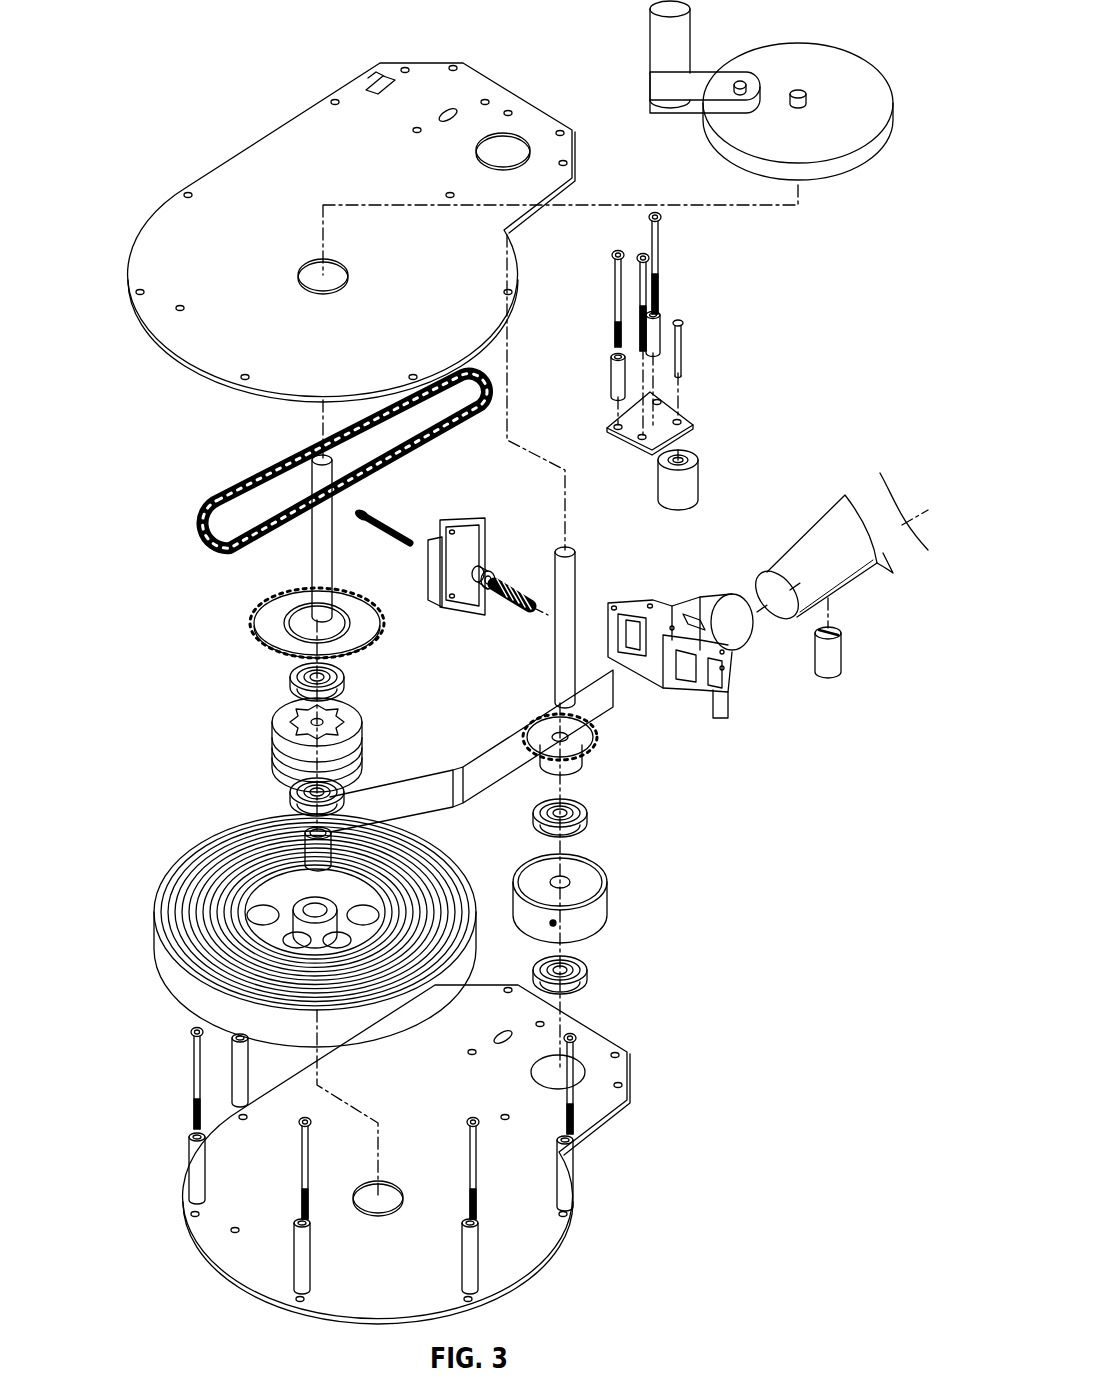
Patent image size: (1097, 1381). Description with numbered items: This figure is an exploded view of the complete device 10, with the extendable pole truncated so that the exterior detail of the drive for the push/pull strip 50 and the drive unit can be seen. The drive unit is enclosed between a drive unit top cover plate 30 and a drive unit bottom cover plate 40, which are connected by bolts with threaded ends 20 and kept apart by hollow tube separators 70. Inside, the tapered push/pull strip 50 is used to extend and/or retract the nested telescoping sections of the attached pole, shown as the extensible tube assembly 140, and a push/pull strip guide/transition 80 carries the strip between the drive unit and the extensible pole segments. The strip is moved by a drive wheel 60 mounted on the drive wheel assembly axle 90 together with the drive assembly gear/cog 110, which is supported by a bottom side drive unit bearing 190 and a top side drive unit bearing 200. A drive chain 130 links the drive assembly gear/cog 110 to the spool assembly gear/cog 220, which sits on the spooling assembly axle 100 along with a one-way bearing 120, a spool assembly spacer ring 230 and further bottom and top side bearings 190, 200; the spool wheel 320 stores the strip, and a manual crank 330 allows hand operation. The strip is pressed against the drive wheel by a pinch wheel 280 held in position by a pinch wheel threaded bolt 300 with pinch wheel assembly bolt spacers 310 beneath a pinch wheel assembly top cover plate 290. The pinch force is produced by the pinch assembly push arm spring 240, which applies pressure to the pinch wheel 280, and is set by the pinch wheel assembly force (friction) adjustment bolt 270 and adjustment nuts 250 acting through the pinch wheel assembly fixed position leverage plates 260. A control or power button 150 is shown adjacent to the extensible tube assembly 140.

The complete device 10 is at (148, 38).
The bolt with threaded end 20 is at (662, 221).
The drive unit top cover plate 30 is at (240, 150).
The drive unit bottom cover plate 40 is at (222, 1245).
The tapered push/pull strip 50 is at (155, 935).
The drive wheel 60 is at (607, 900).
The hollow tube separator 70 is at (190, 1150).
The push/pull strip guide/transition 80 is at (730, 703).
The drive wheel assembly axle 90 is at (577, 580).
The spooling assembly axle 100 is at (312, 568).
The drive assembly gear/cog 110 is at (597, 742).
The one-way bearing 120 is at (280, 722).
The drive chain 130 is at (226, 452).
The extensible tube assembly 140 is at (778, 572).
The control or power button 150 is at (843, 660).
The bottom side drive unit bearing 190 is at (292, 795).
The top side drive unit bearing 200 is at (293, 680).
The spool assembly gear/cog 220 is at (262, 630).
The spool assembly spacer ring 230 is at (225, 872).
The pinch assembly push arm spring 240 is at (508, 607).
The pinch wheel assembly force (friction) adjustment nuts 250 is at (480, 573).
The pinch wheel assembly fixed position leverage plates 260 is at (465, 527).
The pinch wheel assembly force (friction) adjustment bolt 270 is at (408, 532).
The pinch wheel 280 is at (700, 485).
The pinch wheel assembly top cover plate 290 is at (688, 415).
The pinch wheel threaded bolt 300 is at (685, 340).
The pinch wheel assembly bolt spacers 310 is at (610, 380).
The spool wheel 320 is at (843, 168).
The manual crank 330 is at (650, 62).